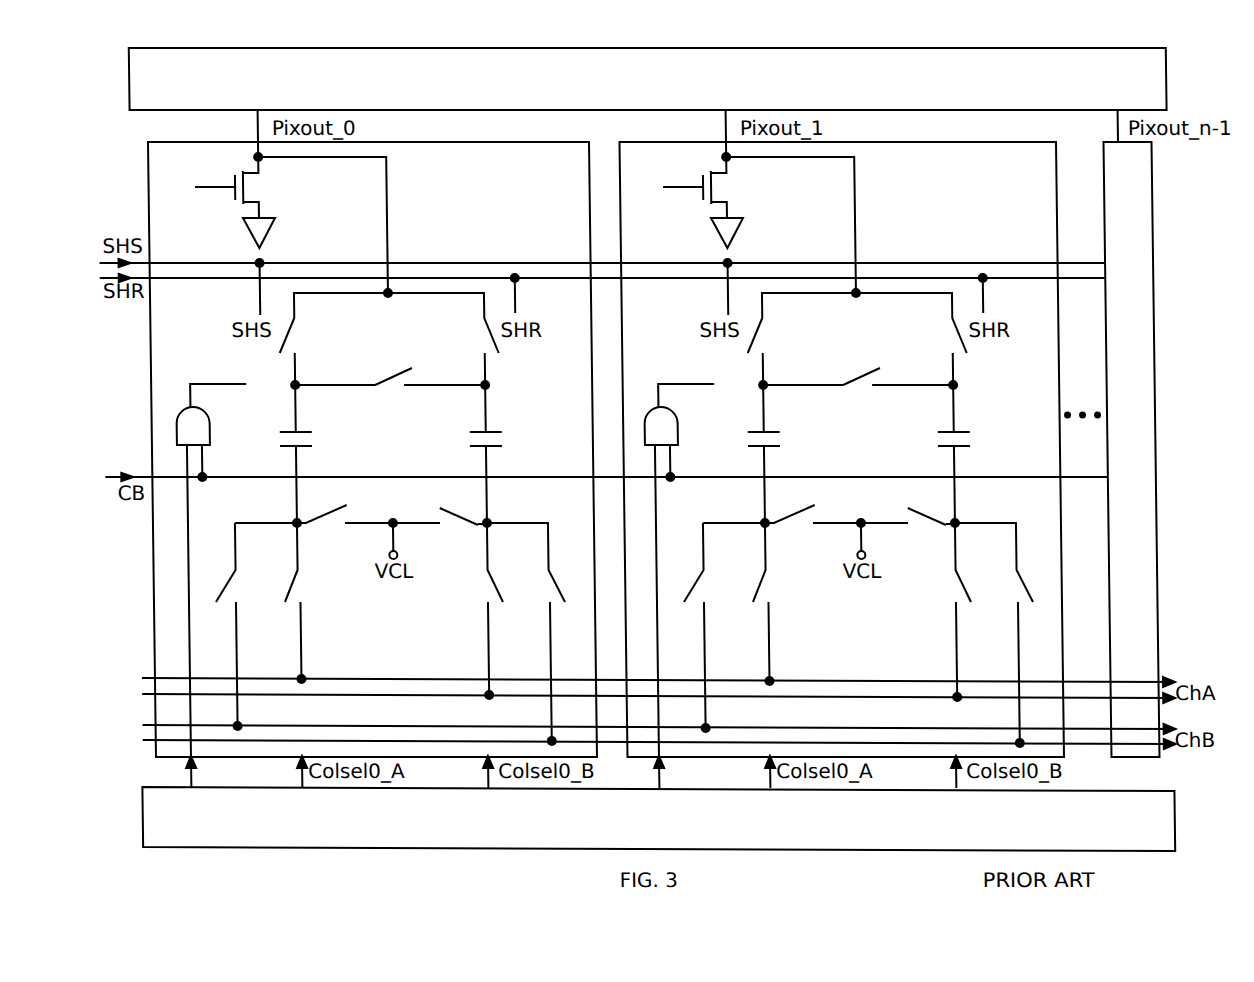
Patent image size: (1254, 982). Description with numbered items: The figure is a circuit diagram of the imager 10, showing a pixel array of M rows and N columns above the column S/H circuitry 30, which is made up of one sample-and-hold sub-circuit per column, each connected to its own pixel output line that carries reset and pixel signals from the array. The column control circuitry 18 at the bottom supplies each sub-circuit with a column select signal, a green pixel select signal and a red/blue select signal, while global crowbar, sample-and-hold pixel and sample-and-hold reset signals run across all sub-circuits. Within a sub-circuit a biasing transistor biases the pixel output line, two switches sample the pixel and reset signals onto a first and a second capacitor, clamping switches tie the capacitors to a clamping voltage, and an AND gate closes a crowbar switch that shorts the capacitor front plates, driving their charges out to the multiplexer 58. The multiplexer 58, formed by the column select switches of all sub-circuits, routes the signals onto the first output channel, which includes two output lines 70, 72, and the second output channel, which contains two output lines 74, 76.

The imager 10 is at (1229, 78).
The column control circuitry 18 is at (138, 820).
The column S/H circuitry 30 is at (1162, 465).
The multiplexer 58 is at (665, 462).
The first ChA pixel output line 70 is at (1141, 682).
The second ChA pixel output line 72 is at (1116, 697).
The first ChB pixel output line 74 is at (1142, 733).
The second ChB pixel output line 76 is at (1170, 747).